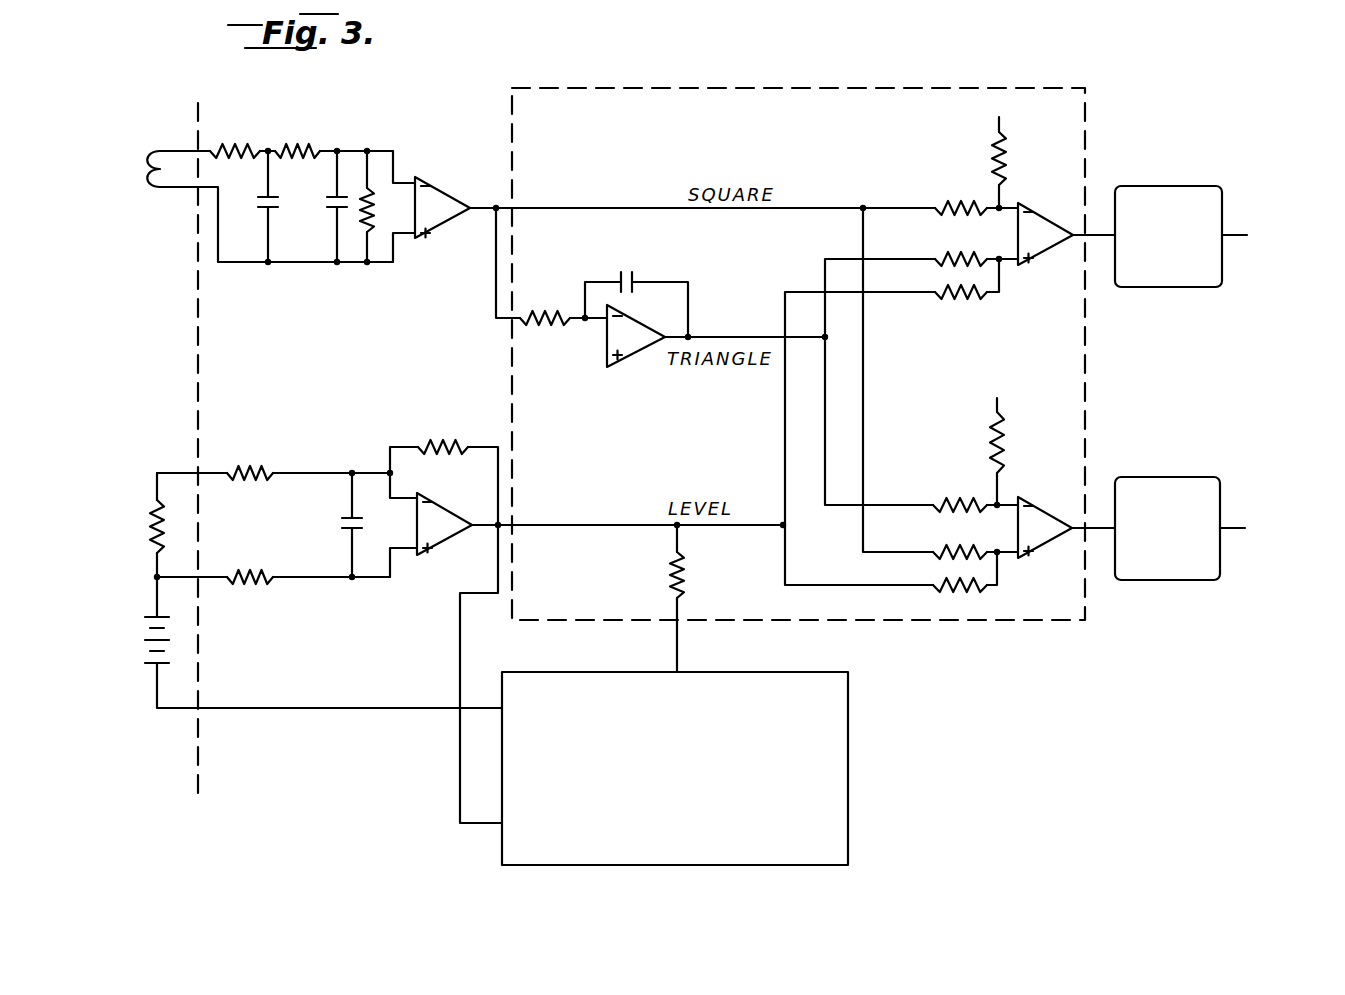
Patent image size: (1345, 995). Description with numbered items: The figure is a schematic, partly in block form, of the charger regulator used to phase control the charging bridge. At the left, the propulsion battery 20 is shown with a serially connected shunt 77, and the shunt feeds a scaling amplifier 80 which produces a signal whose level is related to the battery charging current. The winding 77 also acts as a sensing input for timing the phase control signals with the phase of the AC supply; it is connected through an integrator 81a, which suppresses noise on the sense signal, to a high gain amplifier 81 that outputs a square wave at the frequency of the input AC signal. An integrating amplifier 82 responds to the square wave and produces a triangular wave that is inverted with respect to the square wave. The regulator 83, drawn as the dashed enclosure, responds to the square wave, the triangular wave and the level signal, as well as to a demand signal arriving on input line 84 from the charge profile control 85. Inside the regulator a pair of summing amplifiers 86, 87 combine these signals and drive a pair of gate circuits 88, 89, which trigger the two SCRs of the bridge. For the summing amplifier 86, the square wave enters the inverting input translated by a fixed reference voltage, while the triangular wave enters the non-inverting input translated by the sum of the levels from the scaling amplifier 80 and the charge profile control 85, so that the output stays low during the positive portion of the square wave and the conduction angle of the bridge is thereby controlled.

The propulsion battery 20 is at (141, 636).
The shunt / ryder winding 77 is at (163, 153).
The scaling amplifier 80 is at (432, 553).
The high gain amplifier 81 is at (445, 197).
The integrator 81a is at (302, 232).
The integrating amplifier 82 is at (609, 362).
The regulator 83 is at (1085, 148).
The input line 84 is at (679, 649).
The charge profile control 85 is at (848, 726).
The summing amplifier 86 is at (1036, 268).
The summing amplifier 87 is at (1062, 484).
The gate circuit 88 is at (1151, 288).
The gate circuit 89 is at (1200, 478).